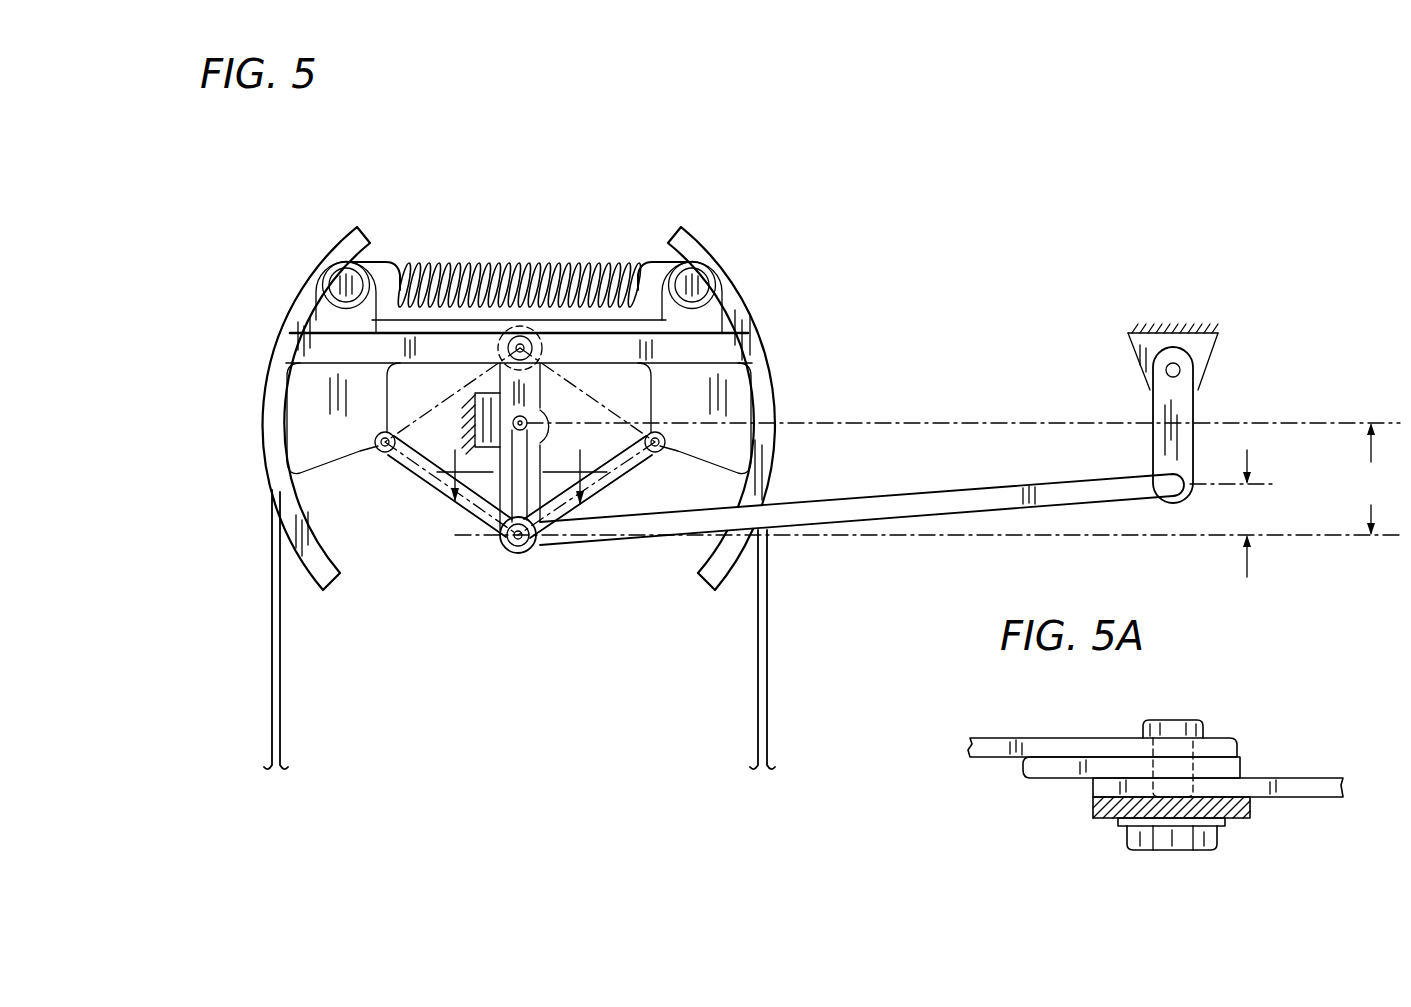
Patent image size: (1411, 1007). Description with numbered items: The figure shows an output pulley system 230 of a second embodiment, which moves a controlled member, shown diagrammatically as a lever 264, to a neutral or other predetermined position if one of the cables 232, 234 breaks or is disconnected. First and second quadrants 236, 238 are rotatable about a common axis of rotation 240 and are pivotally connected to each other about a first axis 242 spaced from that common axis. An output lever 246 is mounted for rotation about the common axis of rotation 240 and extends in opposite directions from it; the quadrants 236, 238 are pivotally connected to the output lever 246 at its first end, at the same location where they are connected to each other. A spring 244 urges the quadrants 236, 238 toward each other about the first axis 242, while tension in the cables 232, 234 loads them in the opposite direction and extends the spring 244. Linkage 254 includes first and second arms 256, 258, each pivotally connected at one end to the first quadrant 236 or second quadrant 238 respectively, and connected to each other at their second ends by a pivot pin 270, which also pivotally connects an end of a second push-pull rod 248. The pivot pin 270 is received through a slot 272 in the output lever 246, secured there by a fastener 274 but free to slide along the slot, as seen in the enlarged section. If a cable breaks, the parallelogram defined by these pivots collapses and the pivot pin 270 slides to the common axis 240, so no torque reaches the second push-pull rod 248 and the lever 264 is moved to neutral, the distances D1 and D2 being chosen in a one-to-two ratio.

In FIG. 5, the output pulley system 230 is at (800, 152).
In FIG. 5, the cable 232 is at (270, 668).
In FIG. 5, the cable 234 is at (770, 672).
In FIG. 5, the first quadrant 236 is at (303, 290).
In FIG. 5, the second quadrant 238 is at (730, 297).
In FIG. 5, the common axis of rotation 240 is at (545, 360).
In FIG. 5, the first axis 242 is at (522, 345).
In FIG. 5, the spring 244 is at (419, 258).
In FIG. 5, the output lever 246 is at (552, 392).
In FIG. 5A, the output lever 246 is at (1255, 810).
In FIG. 5, the second push-pull rod 248 is at (840, 503).
In FIG. 5A, the second push-pull rod 248 is at (1063, 737).
In FIG. 5, the linkage 254 is at (445, 538).
In FIG. 5, the first arm 256 is at (437, 490).
In FIG. 5A, the first arm 256 is at (1288, 783).
In FIG. 5, the second arm 258 is at (622, 455).
In FIG. 5A, the second arm 258 is at (1043, 773).
In FIG. 5, the lever 264 is at (1183, 400).
In FIG. 5, the pivot pin 270 is at (522, 555).
In FIG. 5A, the pivot pin 270 is at (1167, 727).
In FIG. 5, the slot 272 is at (548, 538).
In FIG. 5A, the slot 272 is at (1170, 852).
In FIG. 5A, the fastener 274 is at (1123, 835).